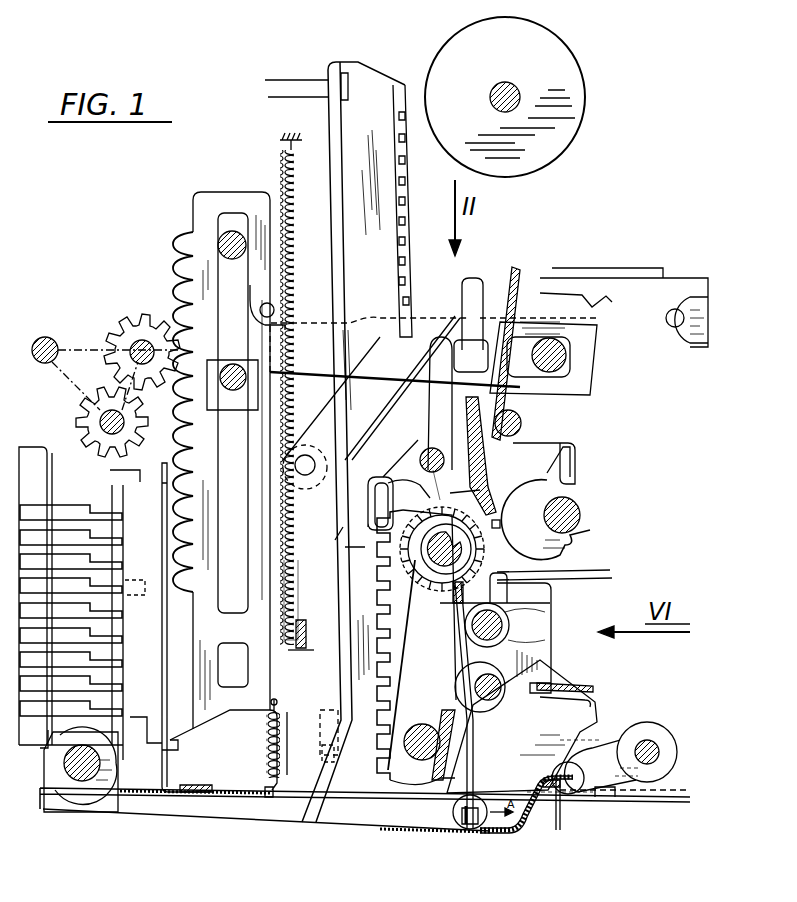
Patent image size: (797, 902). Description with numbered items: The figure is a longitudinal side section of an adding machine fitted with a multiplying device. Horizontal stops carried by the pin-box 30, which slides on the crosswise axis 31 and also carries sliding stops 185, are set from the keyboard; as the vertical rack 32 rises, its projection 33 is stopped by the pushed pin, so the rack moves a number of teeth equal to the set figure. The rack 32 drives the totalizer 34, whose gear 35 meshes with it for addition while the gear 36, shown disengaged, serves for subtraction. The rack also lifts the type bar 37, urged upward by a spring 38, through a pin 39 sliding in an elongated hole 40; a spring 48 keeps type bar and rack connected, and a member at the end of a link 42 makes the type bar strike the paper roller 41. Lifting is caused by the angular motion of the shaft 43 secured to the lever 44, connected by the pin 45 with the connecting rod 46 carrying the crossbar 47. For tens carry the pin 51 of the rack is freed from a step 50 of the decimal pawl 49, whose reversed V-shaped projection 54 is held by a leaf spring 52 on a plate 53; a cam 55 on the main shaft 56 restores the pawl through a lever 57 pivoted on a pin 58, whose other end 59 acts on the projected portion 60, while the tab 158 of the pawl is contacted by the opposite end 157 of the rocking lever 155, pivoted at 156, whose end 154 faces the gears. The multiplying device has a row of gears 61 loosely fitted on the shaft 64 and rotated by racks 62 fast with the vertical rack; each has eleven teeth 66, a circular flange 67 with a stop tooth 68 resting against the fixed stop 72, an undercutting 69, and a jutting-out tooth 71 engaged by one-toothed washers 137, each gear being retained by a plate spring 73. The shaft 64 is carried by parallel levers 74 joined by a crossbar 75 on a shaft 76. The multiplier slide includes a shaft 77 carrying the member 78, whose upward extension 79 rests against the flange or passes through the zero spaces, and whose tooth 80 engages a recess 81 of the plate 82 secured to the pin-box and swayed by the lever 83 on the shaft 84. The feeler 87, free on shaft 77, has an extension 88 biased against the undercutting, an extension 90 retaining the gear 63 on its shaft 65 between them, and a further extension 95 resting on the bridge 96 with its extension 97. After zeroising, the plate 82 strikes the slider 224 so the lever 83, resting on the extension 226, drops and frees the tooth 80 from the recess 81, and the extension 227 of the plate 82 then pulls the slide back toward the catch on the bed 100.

The setting slide (pin-box) 30 is at (71, 490).
The crosswise directed axis 31 is at (73, 775).
The vertical rack 32 is at (198, 212).
The projection 33 is at (136, 718).
The totalizer 34 is at (78, 325).
The totalizer gear 35 is at (140, 312).
The gear 36 is at (76, 412).
The type bar 37 is at (342, 66).
The spring 38 is at (297, 230).
The pin 39 is at (333, 760).
The elongated hole 40 is at (323, 722).
The paper roller 41 is at (580, 97).
The link 42 is at (272, 80).
The shaft 43 is at (567, 358).
The lever 44 is at (422, 318).
The pin 45 is at (298, 458).
The connecting rod 46 is at (284, 552).
The crossbar 47 is at (303, 615).
The spring 48 is at (267, 757).
The decimal pawl 49 is at (305, 328).
The step 50 is at (260, 326).
The pin 51 is at (264, 304).
The leaf spring 52 is at (602, 310).
The plate 53 is at (677, 300).
The reversed V-shaped projection 54 is at (577, 312).
The cam 55 is at (560, 470).
The main shaft 56 is at (581, 512).
The lever 57 is at (577, 446).
The pin 58 is at (519, 421).
The other end 59 is at (512, 272).
The projected portion 60 is at (470, 278).
The gears 61 is at (440, 592).
The rack 62 is at (352, 523).
The gear 63 is at (526, 618).
The shaft 64 is at (470, 548).
The shaft 65 is at (492, 628).
The teeth 66 is at (590, 582).
The circular flange 67 is at (395, 580).
The tooth 68 is at (430, 500).
The undercutting 69 is at (507, 523).
The jutting-out tooth 71 is at (388, 537).
The stop 72 is at (458, 494).
The plate spring 73 is at (491, 497).
The parallel levers 74 is at (430, 661).
The crossbar 75 is at (440, 722).
The shaft 76 is at (410, 742).
The shaft 77 is at (492, 690).
The member 78 is at (471, 748).
The upward extension 79 is at (416, 665).
The tooth 80 is at (453, 812).
The recesses 81 is at (469, 818).
The plate 82 is at (397, 825).
The lever 83 is at (598, 758).
The shaft 84 is at (647, 741).
The feeler 87 is at (512, 715).
The extension 88 is at (540, 574).
The extension 90 is at (530, 598).
The further extension 95 is at (562, 697).
The bridge 96 is at (594, 680).
The extension 97 is at (518, 774).
The bed 100 is at (645, 798).
The washers 137 is at (396, 565).
The end 154 is at (378, 470).
The rocking lever 155 is at (433, 410).
The pivot 156 is at (422, 462).
The opposite end 157 is at (428, 350).
The tab 158 is at (471, 356).
The sliding stops 185 is at (40, 745).
The slider 224 is at (605, 799).
The extension 226 is at (553, 800).
The extension 227 is at (498, 830).